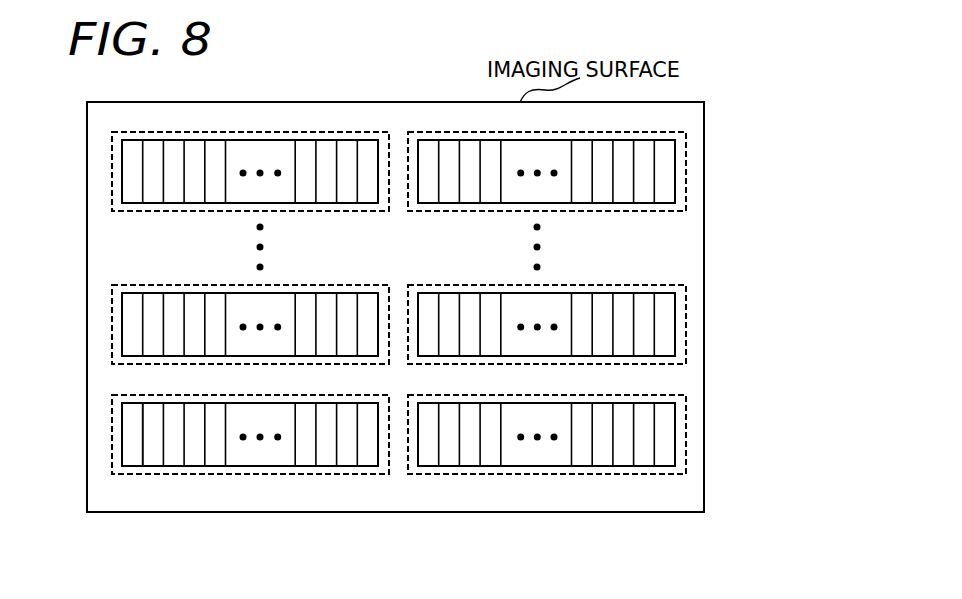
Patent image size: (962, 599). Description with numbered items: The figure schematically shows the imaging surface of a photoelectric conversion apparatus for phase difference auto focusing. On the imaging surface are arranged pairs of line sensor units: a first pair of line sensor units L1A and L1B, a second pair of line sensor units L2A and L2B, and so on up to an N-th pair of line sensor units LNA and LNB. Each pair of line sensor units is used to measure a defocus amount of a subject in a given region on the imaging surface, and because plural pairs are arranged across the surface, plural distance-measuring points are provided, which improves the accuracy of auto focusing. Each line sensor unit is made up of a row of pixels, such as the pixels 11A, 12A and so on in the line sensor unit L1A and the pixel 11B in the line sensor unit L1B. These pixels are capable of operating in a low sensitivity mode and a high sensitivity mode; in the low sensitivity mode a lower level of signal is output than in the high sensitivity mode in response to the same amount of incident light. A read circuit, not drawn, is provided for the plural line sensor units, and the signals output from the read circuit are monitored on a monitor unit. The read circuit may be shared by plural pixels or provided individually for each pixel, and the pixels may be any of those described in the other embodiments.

The line sensor unit LNA is at (112, 175).
The line sensor unit LNB is at (684, 167).
The line sensor unit L2A is at (112, 330).
The line sensor unit L2B is at (684, 320).
The line sensor unit L1A is at (112, 440).
The line sensor unit L1B is at (684, 432).
The pixel 11A is at (127, 466).
The pixel 12A is at (153, 466).
The pixel 11B is at (663, 466).